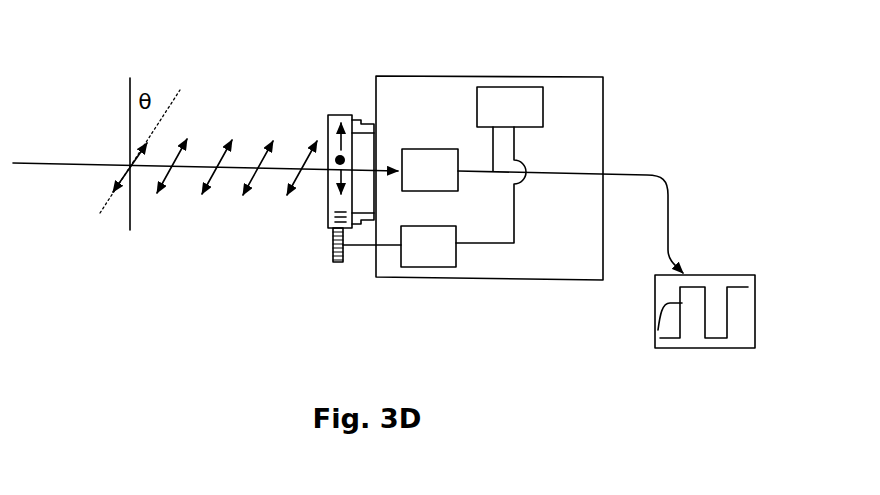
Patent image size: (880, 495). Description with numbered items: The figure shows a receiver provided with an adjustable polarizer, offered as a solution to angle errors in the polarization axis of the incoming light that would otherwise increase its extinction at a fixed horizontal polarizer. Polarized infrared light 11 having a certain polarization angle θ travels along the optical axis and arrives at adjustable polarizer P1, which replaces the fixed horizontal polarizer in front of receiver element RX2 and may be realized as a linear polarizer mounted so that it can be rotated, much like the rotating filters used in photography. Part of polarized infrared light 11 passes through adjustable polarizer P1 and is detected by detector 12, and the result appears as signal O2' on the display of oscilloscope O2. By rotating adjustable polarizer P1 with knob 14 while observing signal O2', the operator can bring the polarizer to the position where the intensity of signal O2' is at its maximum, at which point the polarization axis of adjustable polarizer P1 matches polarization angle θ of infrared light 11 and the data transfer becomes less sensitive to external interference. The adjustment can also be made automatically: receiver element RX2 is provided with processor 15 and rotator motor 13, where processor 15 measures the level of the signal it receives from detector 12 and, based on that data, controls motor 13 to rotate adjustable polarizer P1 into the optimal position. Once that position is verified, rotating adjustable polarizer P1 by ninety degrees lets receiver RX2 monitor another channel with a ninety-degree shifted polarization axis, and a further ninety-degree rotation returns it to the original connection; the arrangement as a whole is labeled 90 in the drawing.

The polarized infrared light 11 is at (242, 168).
The detector 12 is at (442, 149).
The rotator motor 13 is at (407, 267).
The knob 14 is at (330, 133).
The processor 15 is at (512, 87).
The polarization measuring arrangement 90 is at (230, 345).
The adjustable polarizer P1 is at (343, 115).
The receiver element RX2 is at (450, 76).
The oscilloscope O2 is at (708, 341).
The signal O2' is at (634, 318).